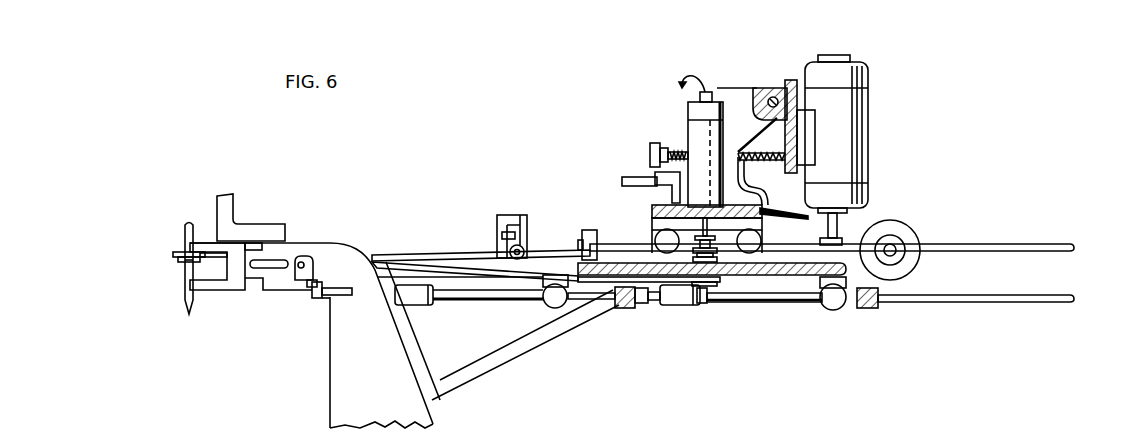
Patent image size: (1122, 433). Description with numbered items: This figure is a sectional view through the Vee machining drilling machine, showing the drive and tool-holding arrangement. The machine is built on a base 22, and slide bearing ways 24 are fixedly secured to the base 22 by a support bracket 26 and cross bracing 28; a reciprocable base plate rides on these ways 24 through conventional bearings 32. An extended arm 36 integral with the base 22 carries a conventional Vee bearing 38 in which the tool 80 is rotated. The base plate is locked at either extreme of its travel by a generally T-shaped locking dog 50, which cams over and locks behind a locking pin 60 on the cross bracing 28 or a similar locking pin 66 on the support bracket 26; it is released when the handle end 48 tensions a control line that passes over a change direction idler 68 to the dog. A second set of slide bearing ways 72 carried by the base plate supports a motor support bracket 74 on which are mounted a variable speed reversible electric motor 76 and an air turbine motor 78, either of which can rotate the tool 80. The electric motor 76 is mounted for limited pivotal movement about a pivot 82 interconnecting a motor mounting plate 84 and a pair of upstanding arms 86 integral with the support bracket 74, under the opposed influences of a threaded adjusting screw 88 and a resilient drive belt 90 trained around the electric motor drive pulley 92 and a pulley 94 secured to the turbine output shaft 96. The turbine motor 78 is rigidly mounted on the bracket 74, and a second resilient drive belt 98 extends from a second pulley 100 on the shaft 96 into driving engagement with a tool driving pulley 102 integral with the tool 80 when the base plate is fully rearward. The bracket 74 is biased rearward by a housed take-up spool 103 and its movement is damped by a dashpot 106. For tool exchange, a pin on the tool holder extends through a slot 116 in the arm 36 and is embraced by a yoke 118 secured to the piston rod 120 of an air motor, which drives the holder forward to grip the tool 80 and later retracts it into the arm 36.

The base 22 is at (340, 357).
The slide bearing ways 24 is at (959, 302).
The support bracket 26 is at (537, 343).
The cross bracing 28 is at (626, 307).
The bearings 32 is at (828, 311).
The extended arm 36 is at (297, 243).
The Vee bearing 38 is at (222, 291).
The handle end 48 is at (500, 225).
The locking dog 50 is at (662, 296).
The locking pin 60 is at (704, 304).
The locking pin 66 is at (435, 302).
The change direction idler 68 is at (528, 250).
The slide bearing ways 72 is at (1022, 246).
The motor support bracket 74 is at (652, 209).
The electric motor 76 is at (858, 106).
The air turbine motor 78 is at (690, 110).
The tool 80 is at (180, 278).
The pivot 82 is at (772, 98).
The motor mounting plate 84 is at (790, 80).
The upstanding arms 86 is at (738, 97).
The threaded adjusting screw 88 is at (682, 152).
The resilient drive belt 90 is at (797, 243).
The electric motor drive pulley 92 is at (848, 242).
The pulley 94 is at (653, 225).
The output shaft 96 is at (742, 205).
The second resilient drive belt 98 is at (432, 250).
The second pulley 100 is at (724, 280).
The tool driving pulley 102 is at (183, 252).
The take-up spool 103 is at (903, 232).
The dashpot 106 is at (623, 176).
The slot 116 is at (274, 269).
The yoke 118 is at (313, 273).
The piston rod 120 is at (346, 300).